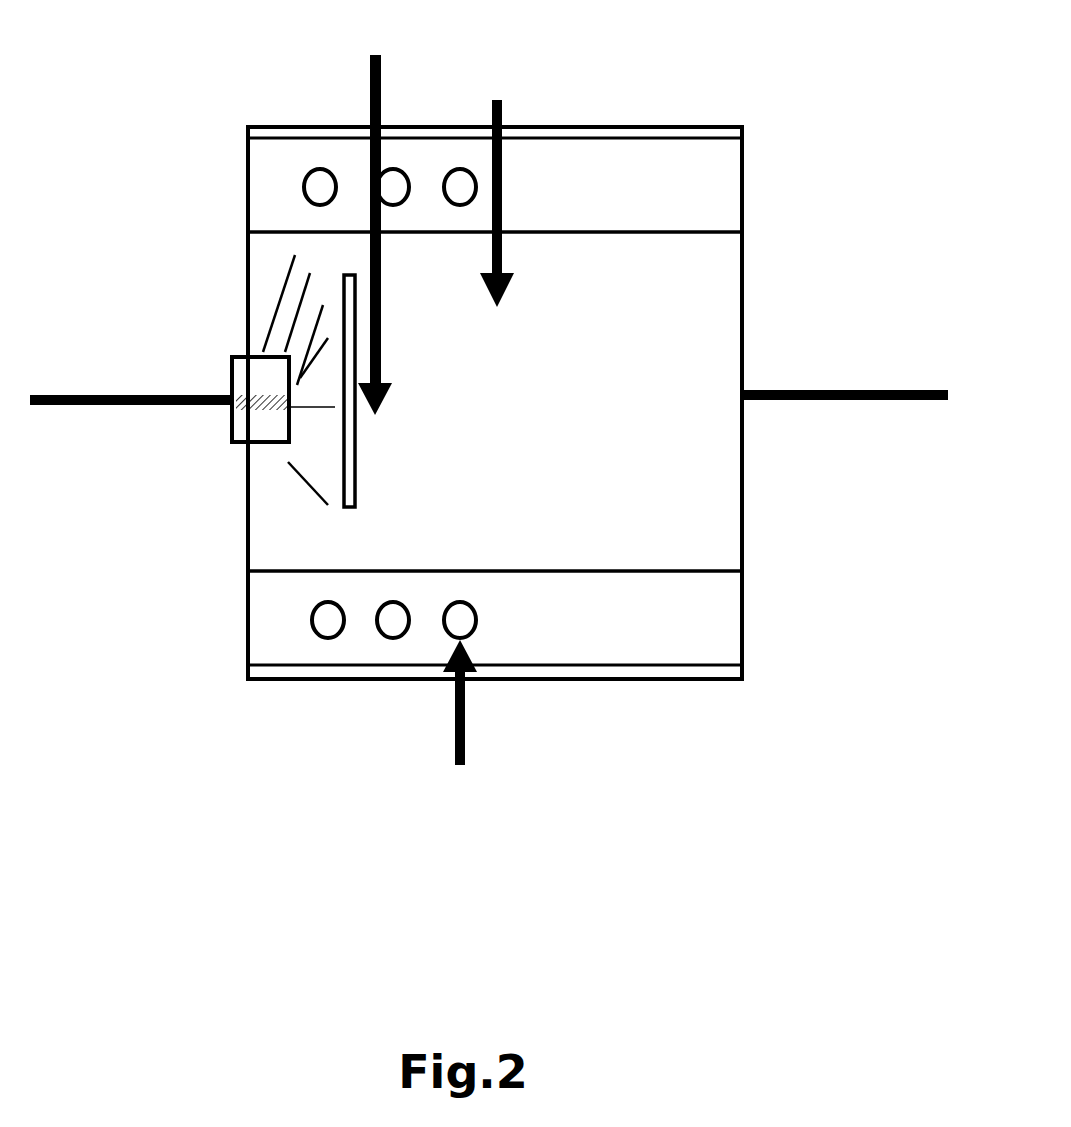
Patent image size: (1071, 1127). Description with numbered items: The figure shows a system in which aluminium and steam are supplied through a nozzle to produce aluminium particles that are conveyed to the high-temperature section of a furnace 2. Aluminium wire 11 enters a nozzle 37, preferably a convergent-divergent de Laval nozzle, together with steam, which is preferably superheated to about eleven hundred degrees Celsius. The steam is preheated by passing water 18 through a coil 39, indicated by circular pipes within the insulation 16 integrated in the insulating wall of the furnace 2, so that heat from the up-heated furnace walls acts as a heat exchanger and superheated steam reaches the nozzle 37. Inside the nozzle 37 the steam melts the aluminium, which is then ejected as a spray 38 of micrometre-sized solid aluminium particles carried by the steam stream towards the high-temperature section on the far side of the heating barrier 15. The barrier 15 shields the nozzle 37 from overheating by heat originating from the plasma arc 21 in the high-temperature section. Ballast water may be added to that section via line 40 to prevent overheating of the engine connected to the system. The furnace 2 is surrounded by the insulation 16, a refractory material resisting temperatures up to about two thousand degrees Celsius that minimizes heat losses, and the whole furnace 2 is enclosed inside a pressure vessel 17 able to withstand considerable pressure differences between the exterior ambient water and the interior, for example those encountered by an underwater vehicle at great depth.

The furnace 2 is at (263, 107).
The aluminium wire 11 is at (138, 420).
The heating barrier 15 is at (350, 508).
The insulation 16 is at (613, 570).
The pressure vessel 17 is at (592, 681).
The water 18 is at (457, 727).
The plasma arc 21 is at (373, 210).
The nozzle 37 is at (233, 440).
The spray 38 is at (287, 500).
The coil 39 is at (395, 640).
The line 40 is at (498, 181).